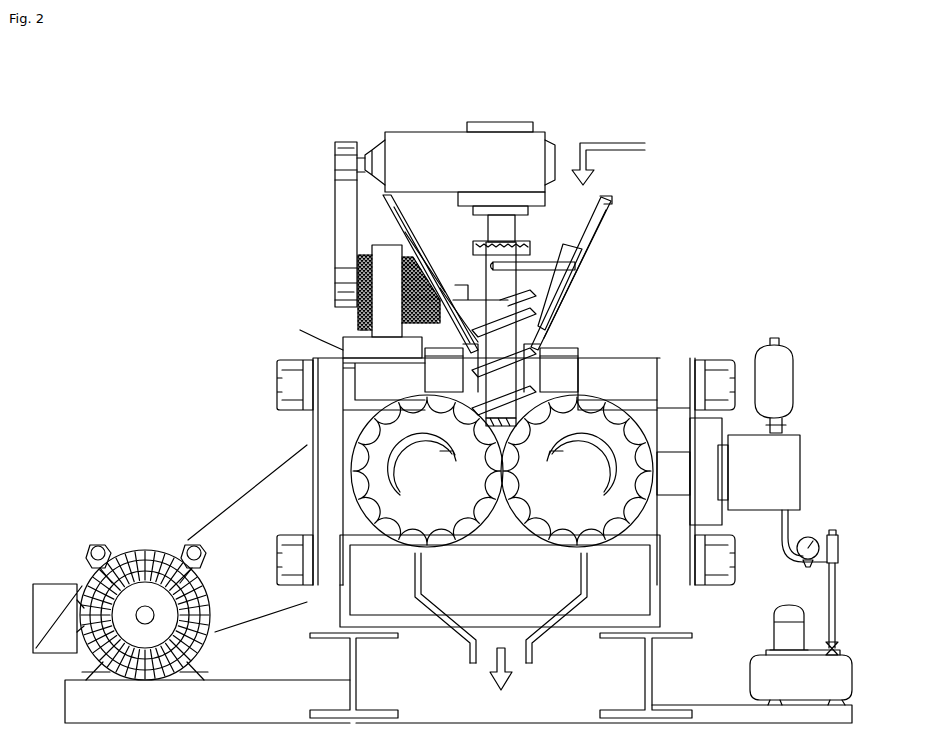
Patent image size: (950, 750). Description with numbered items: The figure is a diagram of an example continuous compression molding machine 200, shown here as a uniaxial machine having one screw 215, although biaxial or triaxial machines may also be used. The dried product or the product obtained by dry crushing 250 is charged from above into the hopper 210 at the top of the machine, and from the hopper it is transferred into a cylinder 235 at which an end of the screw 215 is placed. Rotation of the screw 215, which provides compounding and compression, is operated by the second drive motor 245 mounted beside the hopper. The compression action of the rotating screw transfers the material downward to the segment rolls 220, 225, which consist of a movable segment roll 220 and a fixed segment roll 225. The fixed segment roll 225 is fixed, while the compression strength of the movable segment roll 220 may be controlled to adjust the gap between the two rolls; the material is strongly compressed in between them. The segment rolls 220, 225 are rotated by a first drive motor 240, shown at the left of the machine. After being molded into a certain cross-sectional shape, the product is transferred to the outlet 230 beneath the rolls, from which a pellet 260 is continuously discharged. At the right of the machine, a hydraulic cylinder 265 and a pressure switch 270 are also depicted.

The compression molding machine 200 is at (445, 193).
The dried product or product obtained by dry crushing 250 is at (622, 161).
The hopper 210 is at (608, 209).
The screw 215 is at (540, 324).
The cylinder 235 is at (537, 368).
The movable segment roll 220 is at (620, 380).
The second drive motor 245 is at (347, 328).
The fixed segment roll 225 is at (350, 492).
The first drive motor 240 is at (128, 560).
The pellet 260 is at (500, 659).
The outlet 230 is at (540, 660).
The hydraulic cylinder 265 is at (800, 448).
The pressure switch 270 is at (836, 540).